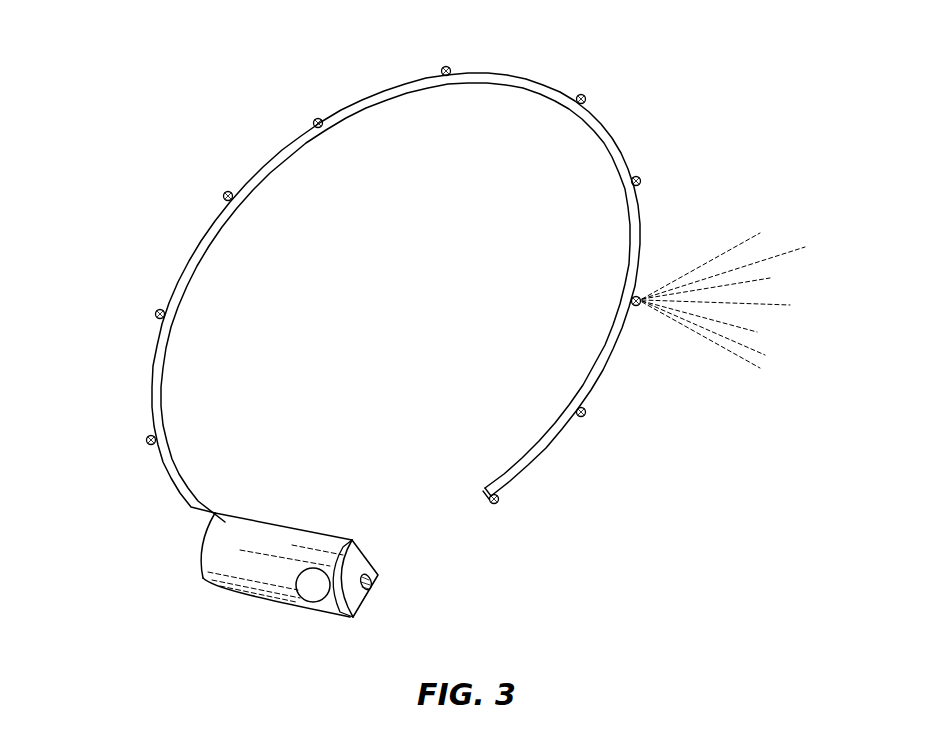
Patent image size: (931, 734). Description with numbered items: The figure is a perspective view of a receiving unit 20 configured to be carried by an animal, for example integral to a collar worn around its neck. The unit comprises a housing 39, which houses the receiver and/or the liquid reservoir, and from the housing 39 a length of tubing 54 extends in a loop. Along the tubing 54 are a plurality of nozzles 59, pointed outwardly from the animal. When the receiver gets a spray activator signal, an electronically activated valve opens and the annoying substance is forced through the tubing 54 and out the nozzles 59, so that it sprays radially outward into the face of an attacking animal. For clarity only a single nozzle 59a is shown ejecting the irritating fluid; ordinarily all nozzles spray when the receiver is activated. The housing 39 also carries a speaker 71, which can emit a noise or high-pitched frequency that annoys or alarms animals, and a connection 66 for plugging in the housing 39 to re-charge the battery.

The receiving unit 20 is at (156, 101).
The length of tubing 54 is at (152, 380).
The nozzles 59 is at (448, 69).
The single nozzle 59a is at (639, 297).
The housing 39 is at (200, 578).
The speaker 71 is at (313, 602).
The connection 66 is at (372, 586).